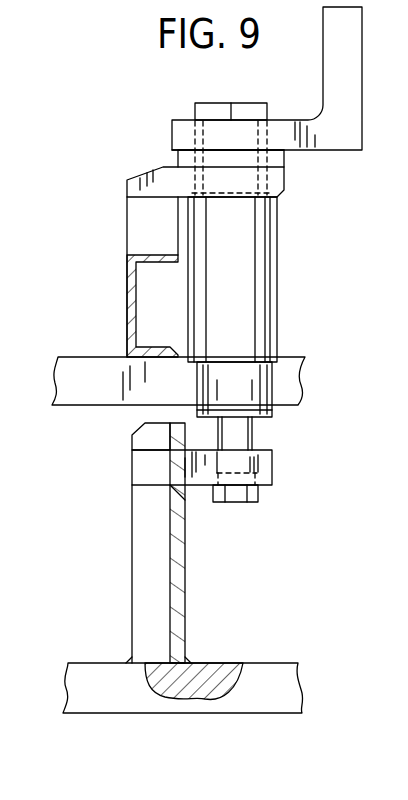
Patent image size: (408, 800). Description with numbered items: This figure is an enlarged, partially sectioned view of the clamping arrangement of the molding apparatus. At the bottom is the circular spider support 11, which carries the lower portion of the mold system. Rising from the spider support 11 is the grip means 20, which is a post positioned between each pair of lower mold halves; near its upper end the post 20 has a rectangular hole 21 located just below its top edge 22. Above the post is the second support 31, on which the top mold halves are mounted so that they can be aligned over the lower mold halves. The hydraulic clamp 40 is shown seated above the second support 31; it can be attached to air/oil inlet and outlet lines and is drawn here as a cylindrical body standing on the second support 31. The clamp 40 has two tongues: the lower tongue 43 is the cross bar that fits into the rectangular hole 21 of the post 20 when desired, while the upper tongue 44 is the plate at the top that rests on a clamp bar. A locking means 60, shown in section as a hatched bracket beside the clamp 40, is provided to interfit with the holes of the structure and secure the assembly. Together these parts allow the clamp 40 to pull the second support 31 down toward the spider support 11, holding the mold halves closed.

The circular spider support 11 is at (122, 702).
The grip means 20 is at (185, 605).
The rectangular hole 21 is at (183, 498).
The top edge 22 is at (140, 428).
The second support 31 is at (87, 368).
The hydraulic clamp 40 is at (270, 275).
The lower tongue 43 is at (163, 467).
The upper tongue 44 is at (152, 175).
The locking means 60 is at (125, 292).